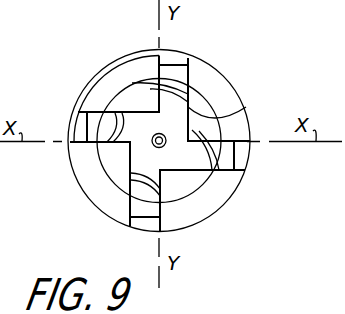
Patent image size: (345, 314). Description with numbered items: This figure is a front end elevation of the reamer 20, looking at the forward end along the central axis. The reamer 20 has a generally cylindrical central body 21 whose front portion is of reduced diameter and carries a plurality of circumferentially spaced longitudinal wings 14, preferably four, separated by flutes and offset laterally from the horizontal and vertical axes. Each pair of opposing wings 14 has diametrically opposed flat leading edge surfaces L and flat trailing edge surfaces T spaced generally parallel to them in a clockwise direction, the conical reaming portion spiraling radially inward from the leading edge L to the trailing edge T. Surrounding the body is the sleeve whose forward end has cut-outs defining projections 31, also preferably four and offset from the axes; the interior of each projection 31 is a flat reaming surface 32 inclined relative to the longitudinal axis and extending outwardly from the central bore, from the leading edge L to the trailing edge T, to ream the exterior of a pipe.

The reamer 20 is at (253, 80).
The wings 14 is at (82, 92).
The cylindrical central body 21 is at (246, 107).
The projections 31 is at (78, 128).
The reaming surface 32 is at (159, 56).
The trailing edge surface T is at (115, 113).
The leading edge surface L is at (130, 113).